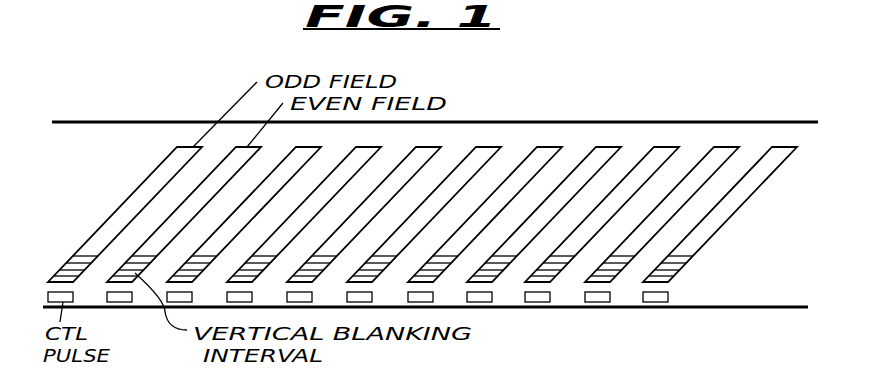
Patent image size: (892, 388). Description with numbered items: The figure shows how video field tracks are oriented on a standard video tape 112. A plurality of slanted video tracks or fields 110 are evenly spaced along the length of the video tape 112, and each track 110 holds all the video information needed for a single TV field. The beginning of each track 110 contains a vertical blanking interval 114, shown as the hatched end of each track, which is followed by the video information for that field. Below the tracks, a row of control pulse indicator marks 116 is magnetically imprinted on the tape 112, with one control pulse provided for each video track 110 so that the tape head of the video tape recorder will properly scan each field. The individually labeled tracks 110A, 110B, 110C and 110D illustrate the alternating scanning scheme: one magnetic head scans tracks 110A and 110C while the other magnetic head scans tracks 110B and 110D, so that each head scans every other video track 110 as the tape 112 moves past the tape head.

The video track 110 is at (150, 175).
The video track 110A is at (772, 147).
The video track 110B is at (714, 147).
The video track 110C is at (654, 147).
The video track 110D is at (596, 147).
The video tape 112 is at (578, 106).
The vertical blanking interval 114 is at (75, 258).
The control pulse indicator mark 116 is at (118, 302).